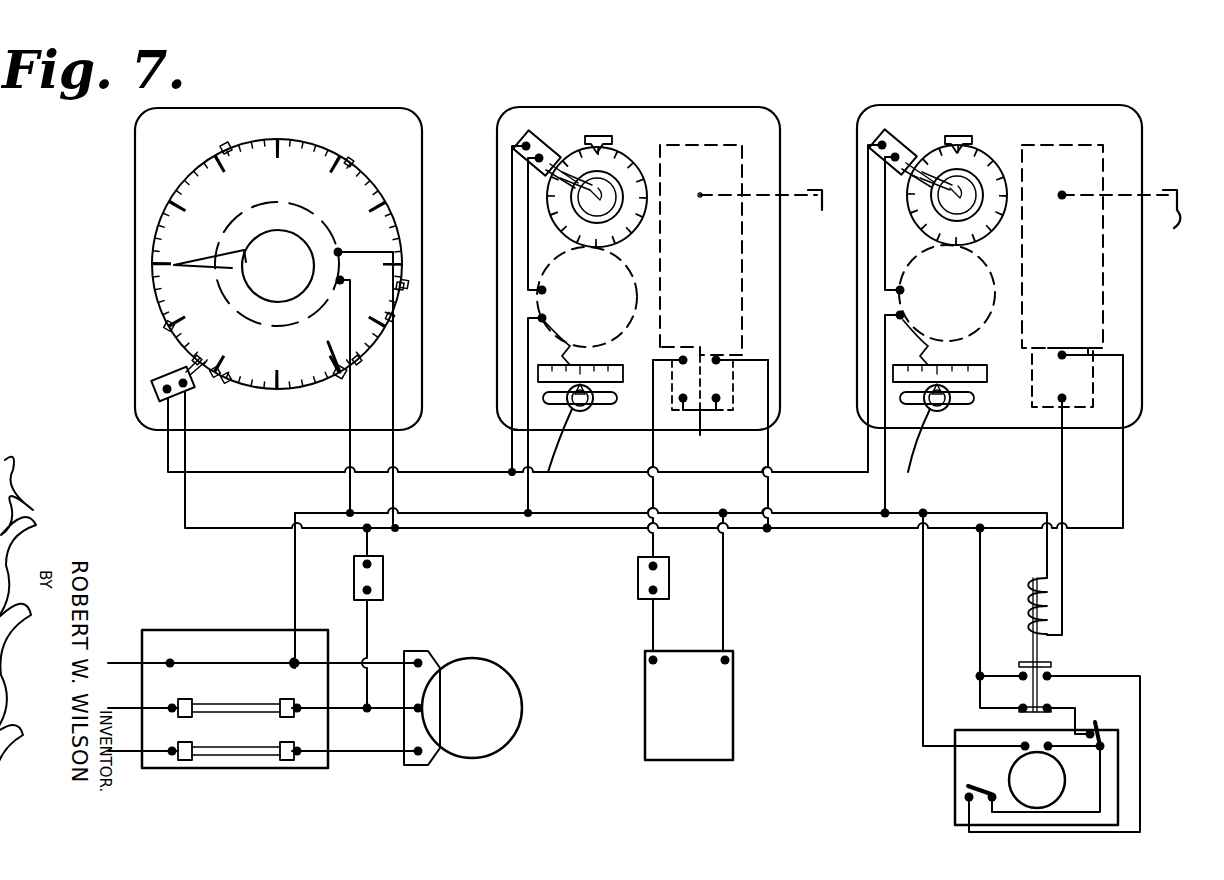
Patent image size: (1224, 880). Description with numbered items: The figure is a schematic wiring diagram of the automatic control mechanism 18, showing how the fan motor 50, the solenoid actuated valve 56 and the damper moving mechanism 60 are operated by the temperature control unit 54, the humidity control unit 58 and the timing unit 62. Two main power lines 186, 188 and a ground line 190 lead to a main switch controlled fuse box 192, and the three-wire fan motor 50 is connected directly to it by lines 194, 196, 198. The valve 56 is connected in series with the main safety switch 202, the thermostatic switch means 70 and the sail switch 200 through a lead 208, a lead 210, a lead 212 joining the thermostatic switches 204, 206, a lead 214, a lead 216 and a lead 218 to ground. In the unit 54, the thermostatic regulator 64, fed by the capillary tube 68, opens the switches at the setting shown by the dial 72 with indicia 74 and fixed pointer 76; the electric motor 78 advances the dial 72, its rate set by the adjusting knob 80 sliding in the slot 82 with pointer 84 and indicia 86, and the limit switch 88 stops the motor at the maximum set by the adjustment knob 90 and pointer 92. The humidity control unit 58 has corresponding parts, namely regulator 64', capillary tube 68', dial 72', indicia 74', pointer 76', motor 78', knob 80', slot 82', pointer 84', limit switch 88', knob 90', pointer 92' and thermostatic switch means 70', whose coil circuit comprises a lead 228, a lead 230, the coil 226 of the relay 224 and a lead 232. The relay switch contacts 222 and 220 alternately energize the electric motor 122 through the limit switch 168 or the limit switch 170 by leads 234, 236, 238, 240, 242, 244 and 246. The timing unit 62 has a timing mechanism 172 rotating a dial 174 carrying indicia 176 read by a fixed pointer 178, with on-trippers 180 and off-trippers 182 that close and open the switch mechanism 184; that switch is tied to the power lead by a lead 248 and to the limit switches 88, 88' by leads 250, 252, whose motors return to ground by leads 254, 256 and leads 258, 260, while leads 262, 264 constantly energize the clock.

The automatic control mechanism 18 is at (1140, 62).
The timing unit 62 is at (331, 108).
The dial 174 is at (318, 166).
The timing mechanism 172 is at (318, 206).
The fixed pointer 178 is at (194, 263).
The indicia 176 is at (218, 149).
The off-trippers 182 is at (355, 165).
The on-trippers 180 is at (410, 285).
The on-off switch mechanism 184 is at (158, 383).
The lead 264 is at (348, 452).
The lead 248 is at (188, 508).
The lead 262 is at (395, 499).
The temperature control unit 54 is at (738, 107).
The indicia 74 is at (631, 197).
The dial 72 is at (677, 233).
The fixed pointer 76 is at (619, 132).
The pointer 92 is at (522, 185).
The limit switch 88 is at (552, 132).
The lead 254 is at (512, 237).
The lead 256 is at (528, 357).
The electric motor 78 is at (625, 297).
The indicia 86 is at (569, 351).
The pointer 84 is at (584, 367).
The adjusting knob 80 is at (588, 402).
The slot 82 is at (563, 440).
The thermostatic regulator 64 is at (742, 229).
The adjustment knob 90 is at (731, 205).
The capillary tube 68 is at (810, 222).
The thermostatic switch means 70 is at (741, 366).
The thermostatic switch 204 is at (721, 397).
The lead 212 is at (700, 432).
The thermostatic switch 206 is at (650, 442).
The lead 210 is at (770, 453).
The lead 250 is at (450, 452).
The lead 214 is at (653, 495).
The lead 252 is at (774, 473).
The sail switch 200 is at (588, 543).
The lead 216 is at (652, 619).
The lead 218 is at (295, 578).
The solenoid actuated valve 56 is at (747, 703).
The humidity control unit 58 is at (1000, 82).
The indicia 74' is at (989, 195).
The dial 72' is at (1037, 233).
The fixed pointer 76' is at (984, 132).
The pointer 92' is at (885, 177).
The limit switch 88' is at (901, 130).
The lead 258 is at (868, 237).
The lead 260 is at (885, 362).
The electric motor 78' is at (987, 293).
The pointer 84' is at (949, 367).
The adjusting knob 80' is at (951, 402).
The slot 82' is at (928, 440).
The thermostatic regulator 64' is at (1106, 239).
The adjustment knob 90' is at (1086, 199).
The capillary tube 68' is at (1165, 222).
The thermostatic switch means 70' is at (1116, 366).
The lead 228 is at (1125, 448).
The lead 230 is at (1062, 462).
The lead 232 is at (915, 513).
The ground line 190 is at (142, 650).
The main power line 186 is at (140, 700).
The main power line 188 is at (133, 767).
The fuse box 192 is at (242, 768).
The line 194 is at (344, 713).
The line 196 is at (338, 755).
The line 198 is at (408, 655).
The fan motor 50 is at (520, 700).
The main safety switch 202 is at (383, 593).
The lead 208 is at (365, 606).
The moving mechanism 60 is at (1168, 659).
The lead 240 is at (923, 682).
The relay 224 is at (1068, 613).
The coil 226 is at (1025, 611).
The lead 234 is at (980, 638).
The switch contacts 220 is at (1050, 673).
The lead 242 is at (990, 675).
The switch contacts 222 is at (1052, 708).
The lead 236 is at (1068, 727).
The lead 244 is at (1140, 768).
The lead 246 is at (1118, 803).
The electric motor 122 is at (1015, 766).
The lead 238 is at (1054, 749).
The limit switch 168 is at (1112, 730).
The limit switch 170 is at (967, 788).